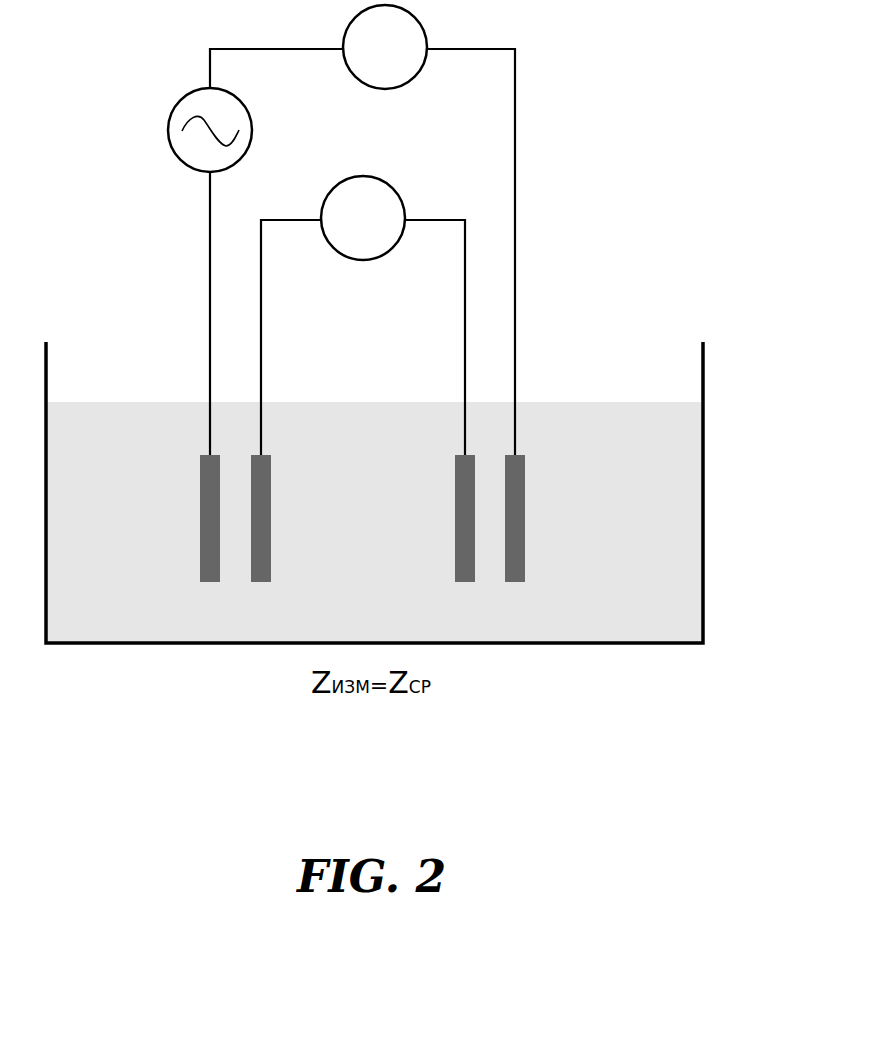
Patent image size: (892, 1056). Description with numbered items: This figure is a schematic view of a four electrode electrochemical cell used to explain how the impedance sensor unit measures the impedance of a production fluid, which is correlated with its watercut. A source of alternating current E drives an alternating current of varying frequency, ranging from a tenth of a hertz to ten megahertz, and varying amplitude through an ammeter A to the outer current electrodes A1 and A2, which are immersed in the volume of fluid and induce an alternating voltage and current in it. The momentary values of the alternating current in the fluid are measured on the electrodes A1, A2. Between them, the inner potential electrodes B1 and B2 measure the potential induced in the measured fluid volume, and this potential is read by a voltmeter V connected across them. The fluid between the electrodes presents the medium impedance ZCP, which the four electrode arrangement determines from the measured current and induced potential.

The current electrode A1 is at (203, 522).
The potential electrode B1 is at (274, 522).
The potential electrode B2 is at (458, 522).
The current electrode A2 is at (529, 522).
The source of alternating current E is at (191, 130).
The ammeter A is at (385, 47).
The voltmeter V is at (363, 218).
The impedance of the medium ZCP is at (374, 492).